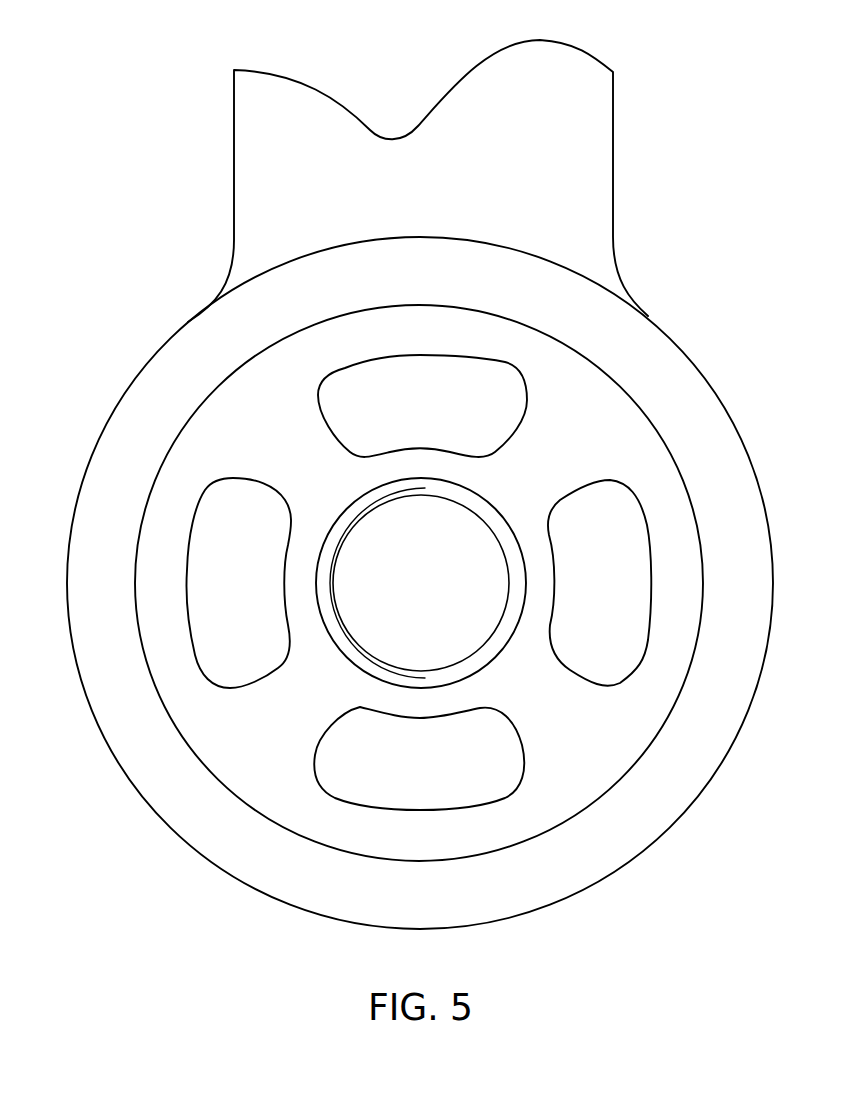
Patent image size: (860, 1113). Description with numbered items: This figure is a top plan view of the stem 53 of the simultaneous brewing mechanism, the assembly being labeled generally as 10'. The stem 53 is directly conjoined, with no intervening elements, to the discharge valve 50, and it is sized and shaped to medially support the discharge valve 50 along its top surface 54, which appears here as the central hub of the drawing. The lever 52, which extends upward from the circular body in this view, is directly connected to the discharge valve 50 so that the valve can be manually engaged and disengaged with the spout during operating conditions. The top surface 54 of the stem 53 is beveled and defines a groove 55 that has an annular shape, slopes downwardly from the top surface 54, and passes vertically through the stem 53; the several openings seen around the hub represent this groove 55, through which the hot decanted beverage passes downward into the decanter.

The trailer coupling (alternate embodiment) 10' is at (106, 152).
The discharge valve 50 is at (503, 513).
The lever 52 is at (613, 122).
The stem 53 is at (772, 520).
The top surface 54 is at (632, 440).
The groove 55 is at (355, 366).